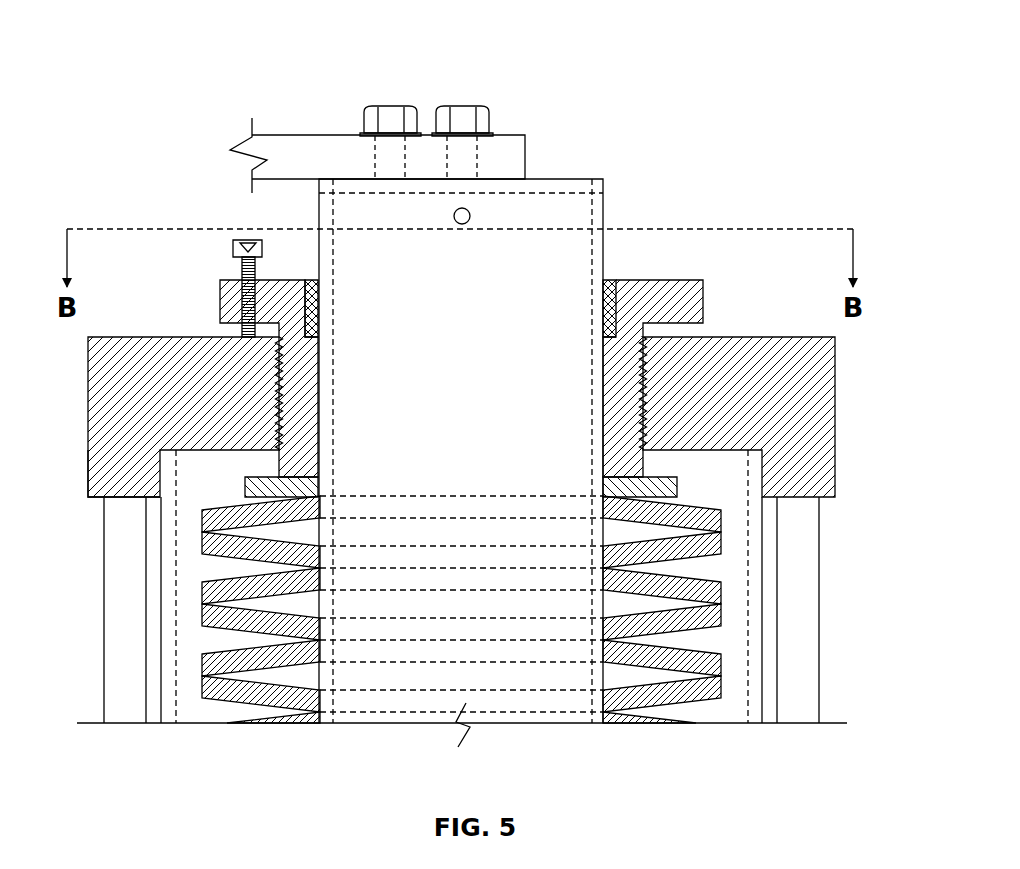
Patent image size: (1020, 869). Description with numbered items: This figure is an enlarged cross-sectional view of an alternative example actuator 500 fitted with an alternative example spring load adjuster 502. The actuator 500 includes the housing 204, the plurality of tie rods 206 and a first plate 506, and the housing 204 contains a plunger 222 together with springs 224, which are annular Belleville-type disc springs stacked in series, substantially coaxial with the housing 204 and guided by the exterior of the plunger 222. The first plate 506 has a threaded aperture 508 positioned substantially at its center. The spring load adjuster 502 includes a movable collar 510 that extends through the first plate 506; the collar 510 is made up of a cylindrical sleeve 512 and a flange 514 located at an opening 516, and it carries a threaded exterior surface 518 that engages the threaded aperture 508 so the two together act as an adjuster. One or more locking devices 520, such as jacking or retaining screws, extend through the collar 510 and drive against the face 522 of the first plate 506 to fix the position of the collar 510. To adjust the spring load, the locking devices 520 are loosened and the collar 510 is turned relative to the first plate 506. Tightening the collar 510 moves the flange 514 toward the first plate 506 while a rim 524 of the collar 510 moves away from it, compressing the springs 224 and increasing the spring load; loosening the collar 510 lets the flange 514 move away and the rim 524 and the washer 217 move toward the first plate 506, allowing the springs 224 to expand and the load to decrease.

The actuator 500 is at (112, 50).
The spring load adjuster 502 is at (182, 212).
The first plate 506 is at (89, 485).
The threaded aperture 508 is at (277, 368).
The movable collar 510 is at (278, 287).
The sleeve 512 is at (633, 362).
The flange 514 is at (222, 312).
The opening 516 is at (604, 276).
The threaded exterior surface 518 is at (678, 491).
The locking device 520 is at (232, 244).
The face 522 is at (752, 337).
The rim 524 is at (253, 481).
The washer 217 is at (245, 487).
The plunger 222 is at (642, 429).
The springs 224 is at (202, 528).
The housing 204 is at (765, 603).
The tie rods 206 is at (112, 675).